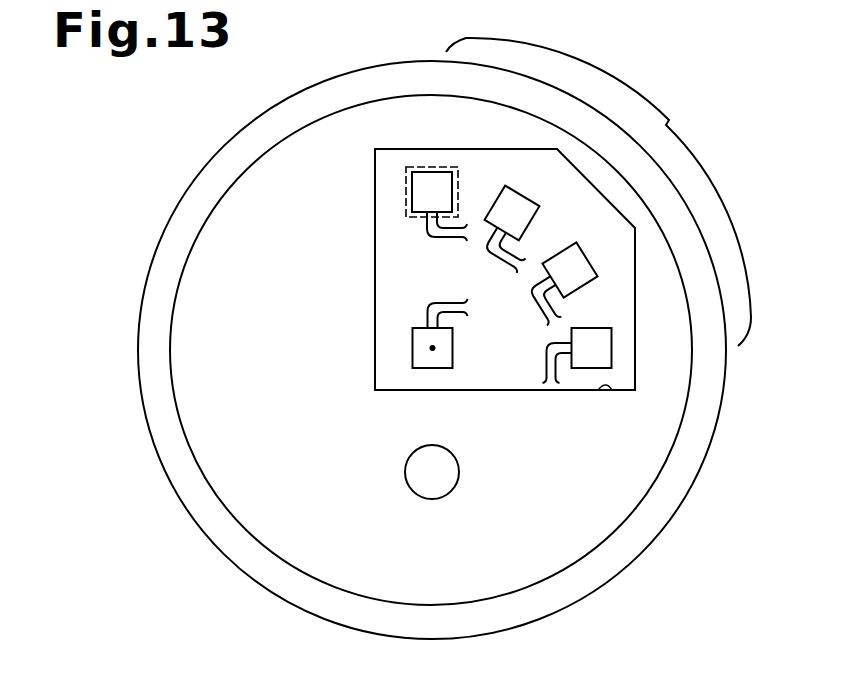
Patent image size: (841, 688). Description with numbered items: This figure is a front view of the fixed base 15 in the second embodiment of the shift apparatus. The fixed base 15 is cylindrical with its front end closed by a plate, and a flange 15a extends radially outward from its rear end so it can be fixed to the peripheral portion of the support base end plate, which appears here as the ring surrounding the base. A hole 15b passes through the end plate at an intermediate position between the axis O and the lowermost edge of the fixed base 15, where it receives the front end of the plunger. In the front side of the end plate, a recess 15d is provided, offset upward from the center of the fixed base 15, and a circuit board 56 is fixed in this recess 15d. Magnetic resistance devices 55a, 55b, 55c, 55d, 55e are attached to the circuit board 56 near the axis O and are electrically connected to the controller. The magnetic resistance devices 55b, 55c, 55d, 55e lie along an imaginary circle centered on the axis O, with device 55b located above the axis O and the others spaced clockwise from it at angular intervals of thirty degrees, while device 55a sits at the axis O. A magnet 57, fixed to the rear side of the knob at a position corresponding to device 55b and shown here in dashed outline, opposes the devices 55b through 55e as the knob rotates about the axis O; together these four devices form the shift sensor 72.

The fixed base 15 is at (622, 503).
The flange 15a is at (625, 552).
The hole 15b is at (436, 495).
The recess 15d is at (608, 392).
The magnetic resistance device 55a is at (413, 350).
The magnetic resistance device 55b is at (431, 172).
The magnetic resistance device 55c is at (522, 208).
The magnetic resistance device 55d is at (585, 267).
The magnetic resistance device 55e is at (601, 345).
The circuit board 56 is at (395, 269).
The magnet 57 is at (405, 190).
The shift sensor 72 is at (674, 109).
The axis O is at (437, 353).